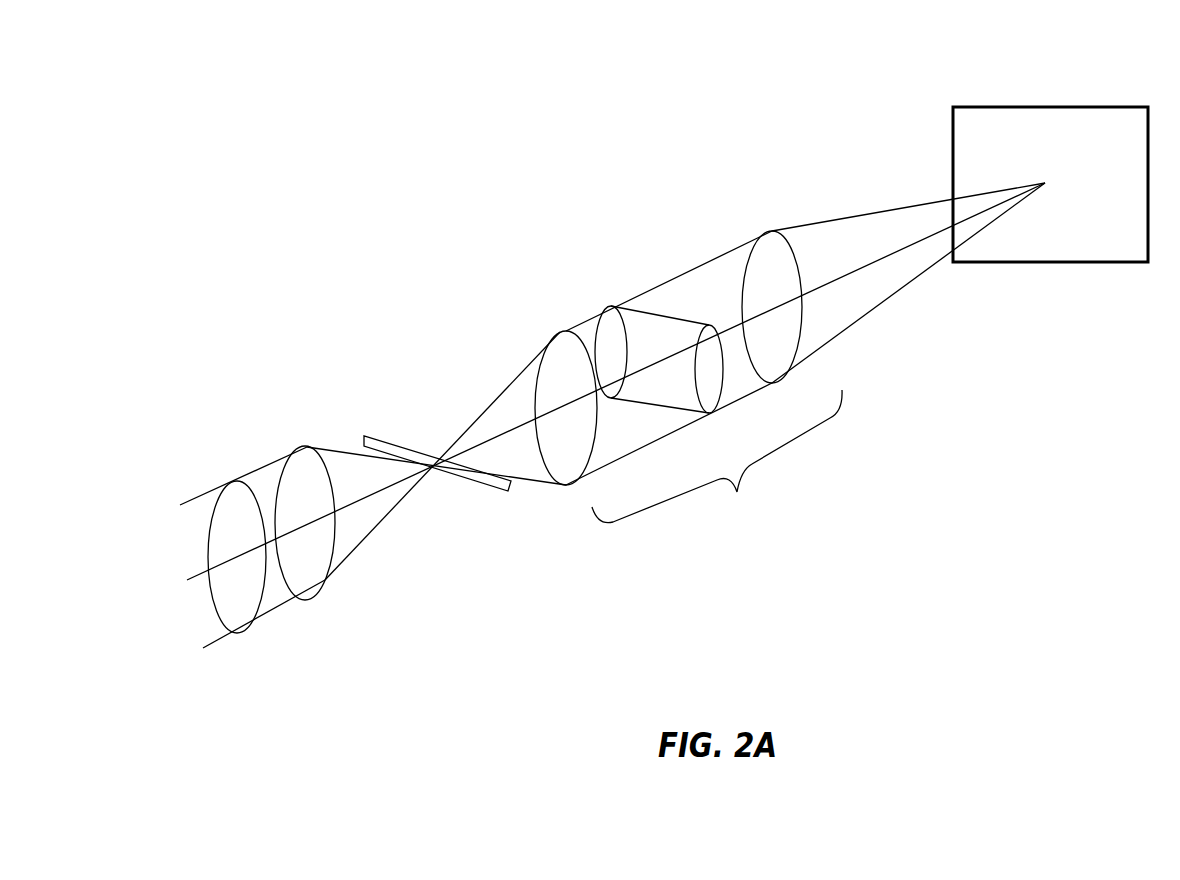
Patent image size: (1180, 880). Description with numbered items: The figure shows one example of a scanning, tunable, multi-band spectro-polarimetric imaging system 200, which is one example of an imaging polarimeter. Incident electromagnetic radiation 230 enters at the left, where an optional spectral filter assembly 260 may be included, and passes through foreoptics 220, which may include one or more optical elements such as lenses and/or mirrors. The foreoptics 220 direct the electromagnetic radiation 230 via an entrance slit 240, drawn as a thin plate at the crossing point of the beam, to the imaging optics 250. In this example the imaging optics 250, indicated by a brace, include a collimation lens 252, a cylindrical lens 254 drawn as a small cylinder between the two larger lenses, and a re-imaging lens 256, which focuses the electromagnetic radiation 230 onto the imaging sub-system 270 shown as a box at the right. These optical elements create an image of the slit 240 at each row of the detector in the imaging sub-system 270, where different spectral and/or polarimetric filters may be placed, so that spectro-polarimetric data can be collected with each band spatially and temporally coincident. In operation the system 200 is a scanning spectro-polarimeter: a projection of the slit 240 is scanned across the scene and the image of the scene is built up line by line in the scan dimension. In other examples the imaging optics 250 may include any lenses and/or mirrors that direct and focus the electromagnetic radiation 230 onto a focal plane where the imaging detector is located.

The system 200 is at (530, 160).
The foreoptics 220 is at (328, 579).
The electromagnetic radiation 230 is at (255, 469).
The entrance slit 240 is at (409, 444).
The imaging optics 250 is at (657, 366).
The collimation lens 252 is at (552, 335).
The cylindrical lens 254 is at (627, 332).
The re-imaging lens 256 is at (766, 282).
The spectral filter assembly 260 is at (256, 634).
The imaging sub-system 270 is at (1049, 136).